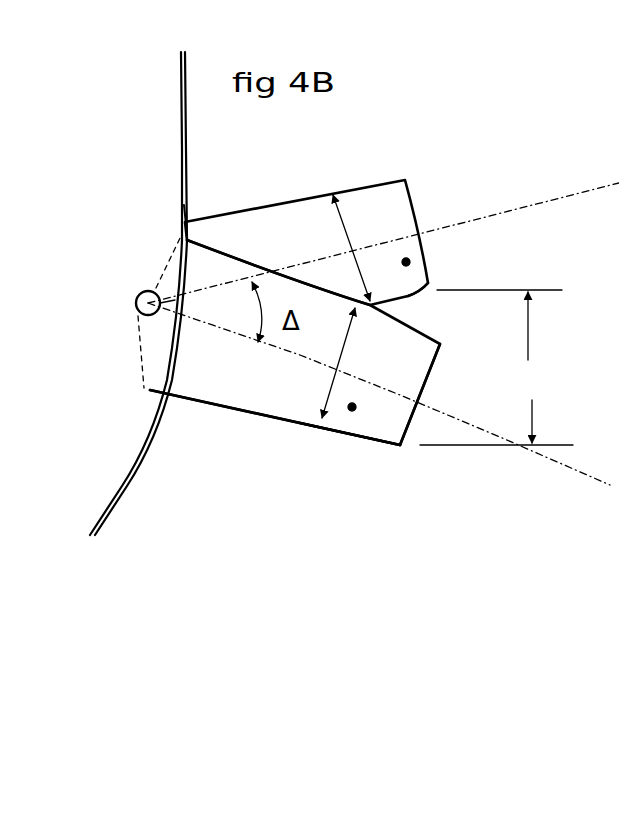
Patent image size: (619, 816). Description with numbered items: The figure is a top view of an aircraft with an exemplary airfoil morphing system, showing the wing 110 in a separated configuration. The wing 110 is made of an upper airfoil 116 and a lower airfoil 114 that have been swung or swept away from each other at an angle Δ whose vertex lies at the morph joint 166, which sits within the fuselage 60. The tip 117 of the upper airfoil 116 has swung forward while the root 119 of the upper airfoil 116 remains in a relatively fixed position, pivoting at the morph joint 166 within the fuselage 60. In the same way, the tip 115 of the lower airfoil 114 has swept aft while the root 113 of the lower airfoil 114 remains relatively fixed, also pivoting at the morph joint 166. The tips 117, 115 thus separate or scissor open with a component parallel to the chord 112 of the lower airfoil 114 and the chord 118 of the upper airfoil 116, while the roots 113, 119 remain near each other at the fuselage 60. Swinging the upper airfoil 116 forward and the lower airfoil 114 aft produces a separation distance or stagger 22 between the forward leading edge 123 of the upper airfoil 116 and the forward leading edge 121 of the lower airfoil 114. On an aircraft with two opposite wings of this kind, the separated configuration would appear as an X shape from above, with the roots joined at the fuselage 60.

The fuselage 60 is at (186, 160).
The root 113 is at (190, 204).
The wing 110 is at (355, 150).
The tip 115 is at (418, 233).
The chord 112 is at (334, 234).
The lower airfoil 114 is at (408, 258).
The forward leading edge 121 is at (412, 298).
The morph joint 166 is at (140, 290).
The chord 118 is at (330, 392).
The tip 117 is at (422, 390).
The stagger 22 is at (496, 367).
The upper airfoil 116 is at (352, 407).
The forward leading edge 123 is at (384, 448).
The root 119 is at (144, 400).